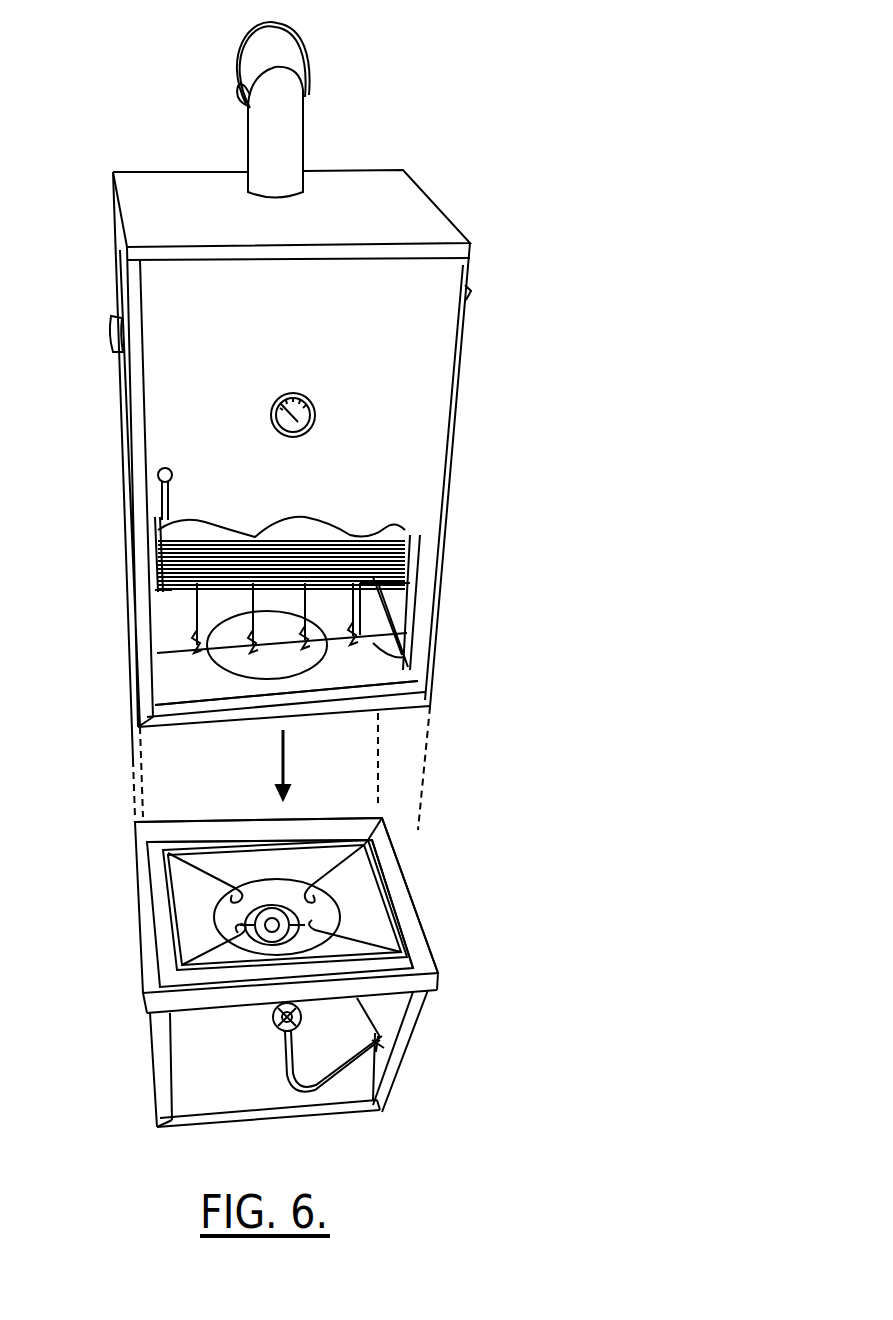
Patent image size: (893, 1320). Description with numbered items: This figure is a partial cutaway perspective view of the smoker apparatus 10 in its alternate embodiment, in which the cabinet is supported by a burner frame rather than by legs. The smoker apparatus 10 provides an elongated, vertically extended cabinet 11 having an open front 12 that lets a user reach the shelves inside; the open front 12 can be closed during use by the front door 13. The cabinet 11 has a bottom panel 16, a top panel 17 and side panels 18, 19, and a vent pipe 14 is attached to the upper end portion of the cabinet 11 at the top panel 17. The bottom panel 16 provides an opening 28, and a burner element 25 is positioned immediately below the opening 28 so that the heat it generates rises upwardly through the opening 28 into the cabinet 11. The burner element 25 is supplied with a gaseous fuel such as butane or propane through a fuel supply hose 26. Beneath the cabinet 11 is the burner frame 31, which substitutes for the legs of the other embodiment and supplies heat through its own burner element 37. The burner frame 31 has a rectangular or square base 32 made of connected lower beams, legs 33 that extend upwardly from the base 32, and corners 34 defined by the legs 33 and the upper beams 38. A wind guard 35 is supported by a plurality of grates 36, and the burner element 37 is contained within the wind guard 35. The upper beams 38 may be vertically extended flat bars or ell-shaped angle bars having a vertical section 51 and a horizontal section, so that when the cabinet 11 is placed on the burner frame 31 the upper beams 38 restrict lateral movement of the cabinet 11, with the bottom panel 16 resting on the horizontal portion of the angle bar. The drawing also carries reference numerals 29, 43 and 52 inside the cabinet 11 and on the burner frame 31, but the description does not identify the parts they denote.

The smoker apparatus 10 is at (428, 75).
The cabinet 11 is at (292, 426).
The open front 12 is at (168, 625).
The front door 13 is at (226, 358).
The vent pipe 14 is at (290, 137).
The bottom panel 16 is at (350, 667).
The top panel 17 is at (202, 172).
The side panel 18 is at (128, 500).
The side panel 19 is at (462, 378).
The burner element 25 is at (272, 1027).
The fuel supply hose 26 is at (293, 1077).
The opening 28 is at (268, 668).
The hanger rail 29 is at (168, 625).
The burner frame 31 is at (290, 970).
The base 32 is at (305, 1118).
The legs 33 is at (403, 1042).
The corners 34 is at (135, 822).
The wind guard 35 is at (271, 890).
The grates 36 is at (173, 893).
The burner element 37 is at (268, 908).
The upper beams 38 is at (408, 893).
The hanging hooks 43 is at (373, 640).
The vertical section 51 is at (307, 840).
The grate corner 52 is at (358, 852).